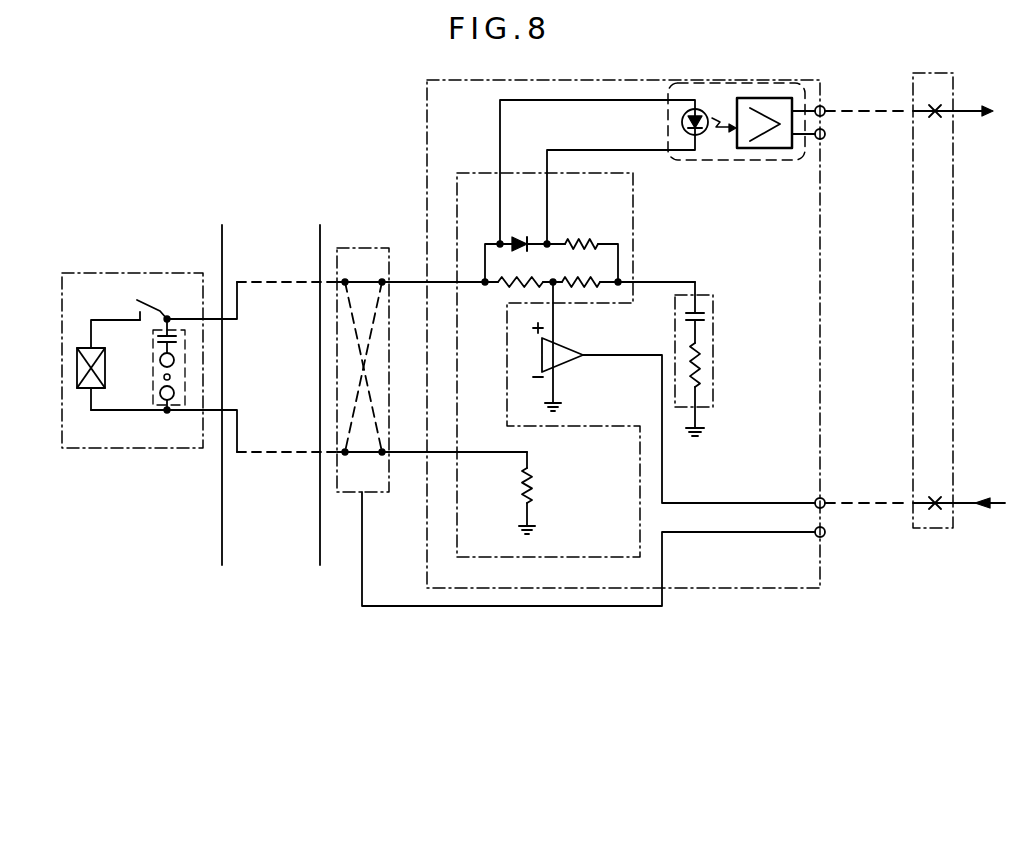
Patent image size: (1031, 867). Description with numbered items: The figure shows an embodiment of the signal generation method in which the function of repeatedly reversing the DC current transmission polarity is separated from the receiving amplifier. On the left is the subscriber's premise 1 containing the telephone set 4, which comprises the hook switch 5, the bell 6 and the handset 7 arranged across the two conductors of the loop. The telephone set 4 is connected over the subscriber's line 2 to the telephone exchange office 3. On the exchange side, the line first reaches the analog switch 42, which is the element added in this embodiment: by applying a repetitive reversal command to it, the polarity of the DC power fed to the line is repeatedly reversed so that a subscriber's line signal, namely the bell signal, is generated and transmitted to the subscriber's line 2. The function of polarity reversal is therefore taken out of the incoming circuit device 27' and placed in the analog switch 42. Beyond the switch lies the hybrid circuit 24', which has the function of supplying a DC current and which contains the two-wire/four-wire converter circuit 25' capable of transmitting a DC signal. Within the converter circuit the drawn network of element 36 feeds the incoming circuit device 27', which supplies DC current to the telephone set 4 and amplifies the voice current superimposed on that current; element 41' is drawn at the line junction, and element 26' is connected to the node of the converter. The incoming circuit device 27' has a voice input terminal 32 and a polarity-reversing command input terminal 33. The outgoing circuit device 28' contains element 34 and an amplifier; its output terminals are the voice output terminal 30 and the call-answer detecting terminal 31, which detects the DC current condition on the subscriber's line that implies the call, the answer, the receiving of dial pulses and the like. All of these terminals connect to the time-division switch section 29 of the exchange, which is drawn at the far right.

The subscriber's premise 1 is at (164, 577).
The subscriber's line 2 is at (277, 577).
The telephone exchange office 3 is at (341, 606).
The telephone set 4 is at (199, 388).
The hook switch 5 is at (141, 300).
The bell 6 is at (154, 362).
The handset 7 is at (114, 346).
The hybrid circuit 24' is at (623, 354).
The two-wire/four-wire converter circuit 25' is at (636, 346).
The RC filter network 26' is at (717, 359).
The incoming circuit device 27' is at (674, 392).
The outgoing circuit device 28' is at (722, 138).
The time-division switch section 29 is at (954, 340).
The voice output terminal 30 is at (825, 108).
The call-answer detecting terminal 31 is at (825, 138).
The voice input terminal 32 is at (825, 499).
The polarity-reversing command input terminal 33 is at (825, 534).
The light emitting diode 34 is at (681, 126).
The diode 36 is at (521, 237).
The terminating resistor 41' is at (549, 493).
The analog switch 42 is at (349, 250).